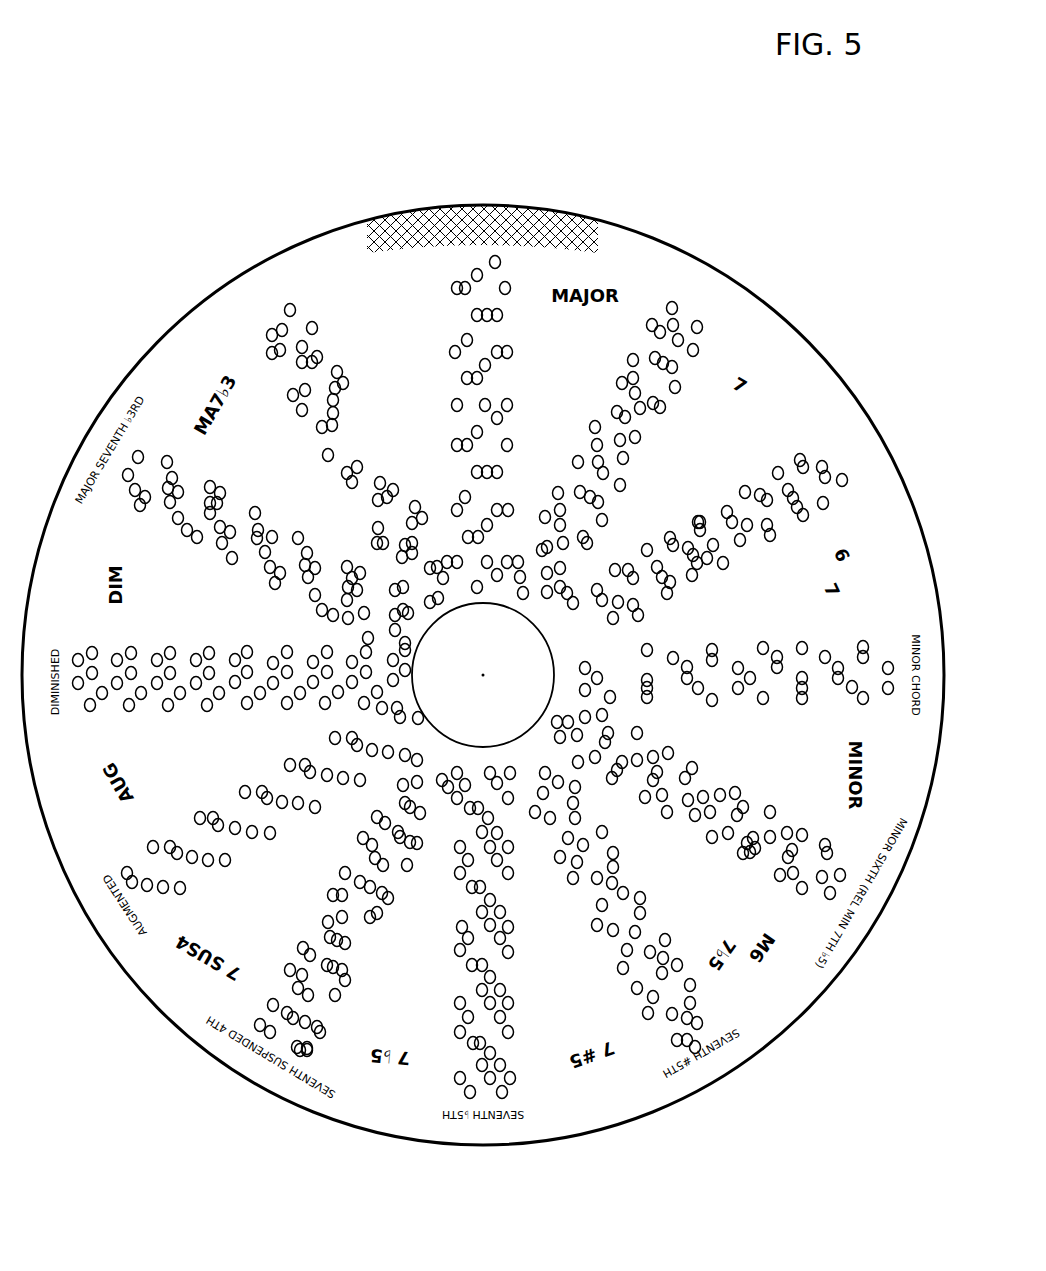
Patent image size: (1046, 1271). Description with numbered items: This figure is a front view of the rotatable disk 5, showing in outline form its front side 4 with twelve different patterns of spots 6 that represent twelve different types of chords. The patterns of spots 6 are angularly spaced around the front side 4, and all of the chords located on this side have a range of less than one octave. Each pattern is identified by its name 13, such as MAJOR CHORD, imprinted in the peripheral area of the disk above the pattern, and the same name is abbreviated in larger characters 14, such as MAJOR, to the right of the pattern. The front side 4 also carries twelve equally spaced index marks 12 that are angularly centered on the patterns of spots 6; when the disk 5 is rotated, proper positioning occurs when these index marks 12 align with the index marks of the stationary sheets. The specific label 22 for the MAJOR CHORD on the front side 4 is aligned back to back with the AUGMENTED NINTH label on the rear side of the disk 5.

The disk 5 is at (683, 249).
The specific label 22 is at (438, 208).
The larger characters 14 is at (363, 293).
The index marks 12 is at (278, 303).
The front side 4 is at (720, 287).
The patterns of spots 6 is at (550, 612).
The name 13 is at (840, 413).